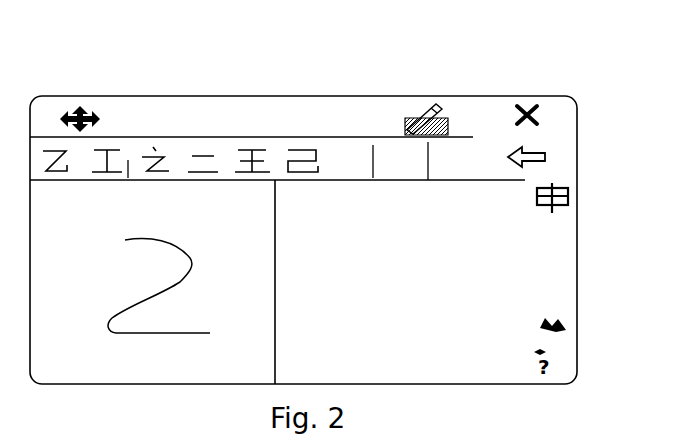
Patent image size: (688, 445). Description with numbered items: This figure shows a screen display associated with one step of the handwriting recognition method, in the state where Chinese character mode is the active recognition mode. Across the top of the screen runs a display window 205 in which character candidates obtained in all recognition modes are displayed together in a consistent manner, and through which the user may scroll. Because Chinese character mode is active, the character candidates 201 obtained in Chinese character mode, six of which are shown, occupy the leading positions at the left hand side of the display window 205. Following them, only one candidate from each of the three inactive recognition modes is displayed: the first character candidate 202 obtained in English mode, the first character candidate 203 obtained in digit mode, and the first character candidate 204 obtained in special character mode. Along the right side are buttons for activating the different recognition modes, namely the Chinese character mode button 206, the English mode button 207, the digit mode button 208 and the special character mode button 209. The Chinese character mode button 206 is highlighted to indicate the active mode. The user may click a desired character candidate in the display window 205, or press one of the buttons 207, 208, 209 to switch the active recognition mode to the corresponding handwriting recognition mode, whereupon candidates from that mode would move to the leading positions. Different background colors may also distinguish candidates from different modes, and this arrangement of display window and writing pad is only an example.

The character candidates obtained in Chinese character mode 201 is at (313, 128).
The first character candidate obtained in English mode 202 is at (348, 137).
The first character candidate obtained in digit mode 203 is at (402, 137).
The first character candidate obtained in special character mode 204 is at (463, 97).
The display window 205 is at (470, 148).
The Chinese character mode button 206 is at (578, 200).
The English mode button 207 is at (575, 240).
The digit mode button 208 is at (577, 282).
The special character mode button 209 is at (577, 325).